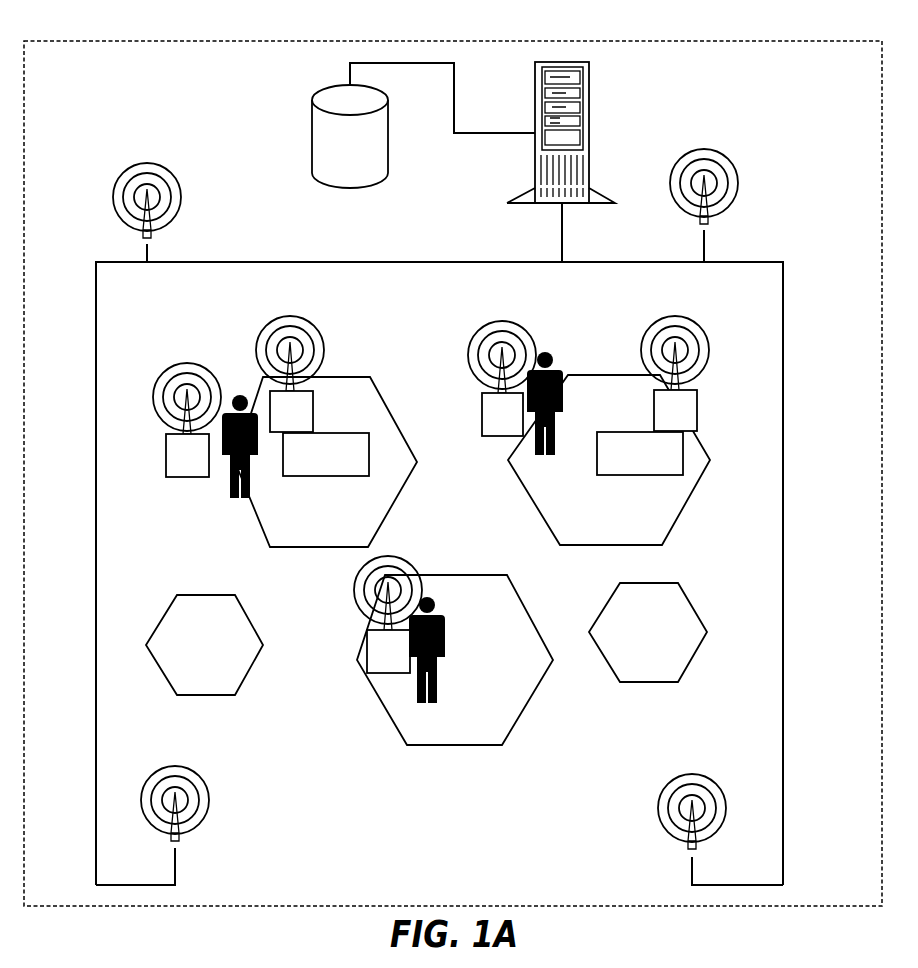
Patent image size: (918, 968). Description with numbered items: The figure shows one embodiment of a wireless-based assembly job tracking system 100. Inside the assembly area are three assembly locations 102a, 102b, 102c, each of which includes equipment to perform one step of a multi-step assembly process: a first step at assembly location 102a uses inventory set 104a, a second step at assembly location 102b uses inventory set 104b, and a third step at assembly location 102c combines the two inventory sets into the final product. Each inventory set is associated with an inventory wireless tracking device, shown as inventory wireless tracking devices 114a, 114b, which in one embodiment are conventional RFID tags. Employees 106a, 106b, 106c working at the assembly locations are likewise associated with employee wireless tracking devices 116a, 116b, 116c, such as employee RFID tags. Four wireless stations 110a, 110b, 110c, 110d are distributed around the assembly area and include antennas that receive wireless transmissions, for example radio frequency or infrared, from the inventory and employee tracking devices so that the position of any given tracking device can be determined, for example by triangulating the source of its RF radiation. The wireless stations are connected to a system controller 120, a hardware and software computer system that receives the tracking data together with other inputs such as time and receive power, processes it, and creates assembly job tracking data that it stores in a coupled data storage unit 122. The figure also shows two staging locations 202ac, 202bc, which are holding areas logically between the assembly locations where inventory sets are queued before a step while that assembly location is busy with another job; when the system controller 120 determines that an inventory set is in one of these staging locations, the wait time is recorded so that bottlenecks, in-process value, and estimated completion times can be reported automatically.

The tracking system 100 is at (453, 460).
The system controller 120 is at (589, 82).
The data storage unit 122 is at (312, 133).
The wireless station 110a is at (124, 178).
The wireless station 110b is at (703, 150).
The wireless station 110c is at (658, 817).
The wireless station 110d is at (213, 803).
The assembly location 102a is at (326, 462).
The assembly location 102b is at (609, 460).
The assembly location 102c is at (455, 660).
The staging location 202ac is at (204, 645).
The staging location 202bc is at (648, 632).
The inventory wireless tracking device 114a is at (270, 335).
The inventory wireless tracking device 114b is at (645, 343).
The employee wireless tracking device 116a is at (167, 461).
The employee wireless tracking device 116b is at (482, 405).
The employee wireless tracking device 116c is at (375, 660).
The inventory set 104a is at (369, 461).
The inventory set 104b is at (683, 453).
The employee 106a is at (246, 500).
The employee 106b is at (543, 462).
The employee 106c is at (436, 601).